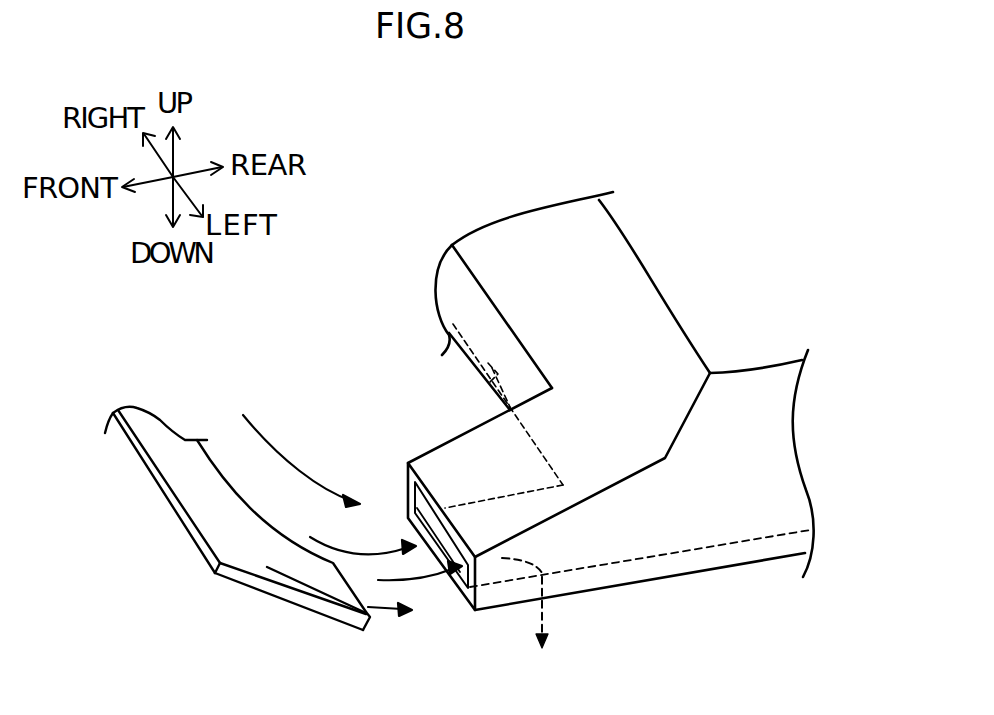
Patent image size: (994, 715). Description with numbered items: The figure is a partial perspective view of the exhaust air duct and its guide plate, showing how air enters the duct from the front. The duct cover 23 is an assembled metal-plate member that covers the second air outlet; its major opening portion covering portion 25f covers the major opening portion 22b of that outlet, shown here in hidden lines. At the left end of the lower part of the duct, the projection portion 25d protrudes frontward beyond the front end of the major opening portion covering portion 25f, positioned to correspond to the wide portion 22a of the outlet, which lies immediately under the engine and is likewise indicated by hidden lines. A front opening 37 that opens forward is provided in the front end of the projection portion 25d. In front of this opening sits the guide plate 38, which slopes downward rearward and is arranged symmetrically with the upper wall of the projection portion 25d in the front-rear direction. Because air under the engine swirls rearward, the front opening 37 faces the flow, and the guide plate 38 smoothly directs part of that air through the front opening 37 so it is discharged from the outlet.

The duct cover 23 is at (630, 308).
The major opening portion covering portion 25f is at (505, 291).
The major opening portion 22b is at (488, 363).
The projection portion 25d is at (483, 450).
The front opening 37 is at (440, 547).
The wide portion 22a is at (588, 560).
The guide plate 38 is at (250, 578).